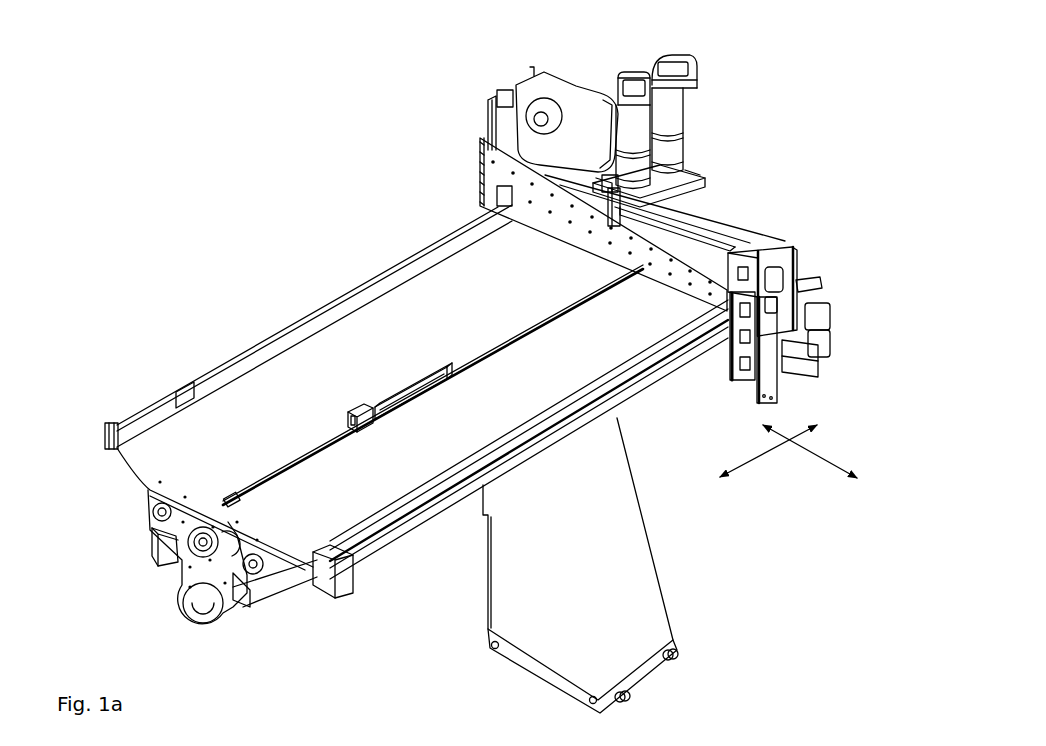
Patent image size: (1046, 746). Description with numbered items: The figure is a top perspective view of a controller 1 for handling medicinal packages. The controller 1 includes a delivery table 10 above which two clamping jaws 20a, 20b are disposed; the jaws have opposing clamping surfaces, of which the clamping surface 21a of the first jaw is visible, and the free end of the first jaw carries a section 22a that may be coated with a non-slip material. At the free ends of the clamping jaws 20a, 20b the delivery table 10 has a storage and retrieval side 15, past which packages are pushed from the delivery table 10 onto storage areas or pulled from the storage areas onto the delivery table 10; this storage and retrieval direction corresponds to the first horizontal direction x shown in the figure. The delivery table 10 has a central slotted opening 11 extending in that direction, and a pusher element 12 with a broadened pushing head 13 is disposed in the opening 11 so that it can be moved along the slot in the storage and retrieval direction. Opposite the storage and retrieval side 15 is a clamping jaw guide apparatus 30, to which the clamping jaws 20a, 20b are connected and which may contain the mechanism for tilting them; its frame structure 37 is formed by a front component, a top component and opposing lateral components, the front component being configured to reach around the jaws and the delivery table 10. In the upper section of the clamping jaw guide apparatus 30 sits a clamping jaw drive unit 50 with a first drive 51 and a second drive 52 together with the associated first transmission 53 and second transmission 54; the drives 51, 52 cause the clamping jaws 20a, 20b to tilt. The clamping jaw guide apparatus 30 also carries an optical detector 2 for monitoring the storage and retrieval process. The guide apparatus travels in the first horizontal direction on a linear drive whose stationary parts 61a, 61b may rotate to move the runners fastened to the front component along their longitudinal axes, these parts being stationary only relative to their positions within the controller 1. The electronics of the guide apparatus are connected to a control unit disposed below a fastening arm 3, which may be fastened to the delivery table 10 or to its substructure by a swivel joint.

The controller 1 is at (461, 359).
The optical detector 2 is at (572, 112).
The fastening arm 3 is at (593, 560).
The delivery table 10 is at (387, 439).
The central slotted opening 11 is at (498, 343).
The pusher element 12 is at (388, 403).
The broadened pushing head 13 is at (368, 427).
The storage and retrieval side 15 is at (130, 476).
The clamping jaw 20a is at (306, 327).
The clamping jaw 20b is at (372, 553).
The clamping surface 21a is at (333, 315).
The section coated with non-slip material 22a is at (148, 420).
The clamping jaw guide apparatus 30 is at (678, 270).
The frame structure 37 is at (789, 243).
The clamping jaw drive unit 50 is at (685, 120).
The first drive 51 is at (655, 130).
The second drive 52 is at (644, 137).
The first transmission 53 is at (673, 148).
The second transmission 54 is at (683, 159).
The stationary part 61a is at (152, 518).
The stationary part 61b is at (240, 596).